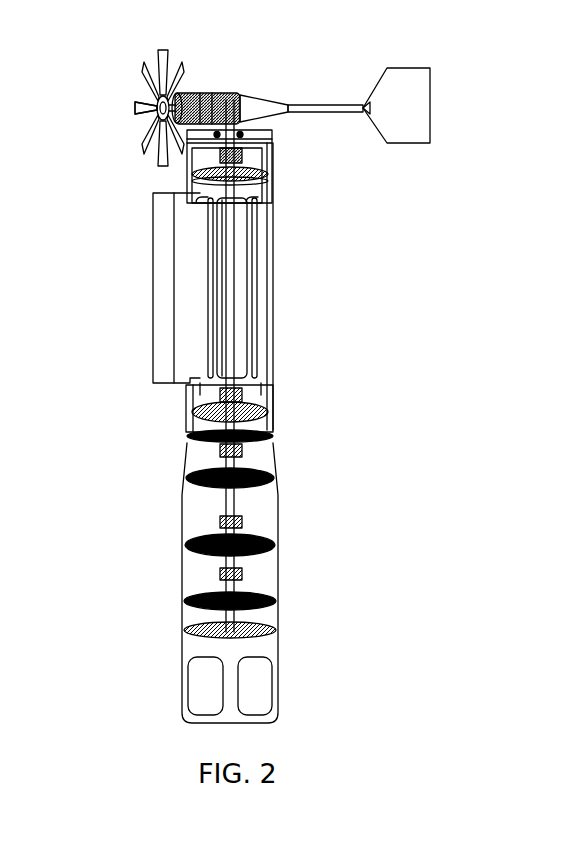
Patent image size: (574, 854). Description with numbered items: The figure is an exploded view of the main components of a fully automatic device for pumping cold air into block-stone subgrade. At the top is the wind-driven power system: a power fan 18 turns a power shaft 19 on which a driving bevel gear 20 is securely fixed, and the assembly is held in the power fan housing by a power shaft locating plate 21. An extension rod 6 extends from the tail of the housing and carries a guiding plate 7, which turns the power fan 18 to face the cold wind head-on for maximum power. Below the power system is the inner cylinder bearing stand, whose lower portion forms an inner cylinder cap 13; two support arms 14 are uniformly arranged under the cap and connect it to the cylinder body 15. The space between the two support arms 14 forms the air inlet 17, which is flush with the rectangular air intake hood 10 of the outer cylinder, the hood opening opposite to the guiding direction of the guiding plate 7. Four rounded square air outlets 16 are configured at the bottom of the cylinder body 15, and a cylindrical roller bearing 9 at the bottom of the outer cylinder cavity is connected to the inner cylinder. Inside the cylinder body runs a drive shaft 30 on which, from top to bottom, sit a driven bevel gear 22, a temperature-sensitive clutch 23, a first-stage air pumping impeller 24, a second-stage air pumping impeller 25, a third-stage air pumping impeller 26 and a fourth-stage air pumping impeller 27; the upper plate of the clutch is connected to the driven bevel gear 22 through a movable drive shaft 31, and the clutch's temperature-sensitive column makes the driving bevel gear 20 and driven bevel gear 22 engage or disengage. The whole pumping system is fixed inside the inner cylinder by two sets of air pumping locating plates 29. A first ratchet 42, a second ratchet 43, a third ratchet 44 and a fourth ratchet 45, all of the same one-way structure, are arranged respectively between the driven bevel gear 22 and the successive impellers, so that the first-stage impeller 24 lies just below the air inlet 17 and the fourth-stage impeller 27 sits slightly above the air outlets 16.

The extension rod 6 is at (325, 79).
The guiding plate 7 is at (389, 128).
The cylindrical roller bearing 9 is at (200, 421).
The air intake hood 10 is at (144, 288).
The inner cylinder cap 13 is at (186, 286).
The support arm 14 is at (156, 288).
The cylinder body 15 is at (205, 583).
The air outlet 16 is at (202, 686).
The air inlet 17 is at (184, 296).
The power fan 18 is at (121, 128).
The power shaft 19 is at (163, 91).
The driving bevel gear 20 is at (217, 85).
The power shaft locating plate 21 is at (215, 63).
The driven bevel gear 22 is at (269, 84).
The temperature-sensitive clutch 23 is at (258, 180).
The first-stage air pumping impeller 24 is at (268, 445).
The second-stage air pumping impeller 25 is at (268, 497).
The third-stage air pumping impeller 26 is at (267, 562).
The fourth-stage air pumping impeller 27 is at (285, 597).
The air pumping locating plate 29 is at (267, 421).
The drive shaft 30 is at (235, 366).
The movable drive shaft 31 is at (255, 140).
The No. 1 ratchet 42 is at (260, 403).
The No. 2 ratchet 43 is at (285, 468).
The No. 3 ratchet 44 is at (285, 537).
The No. 4 ratchet 45 is at (204, 604).